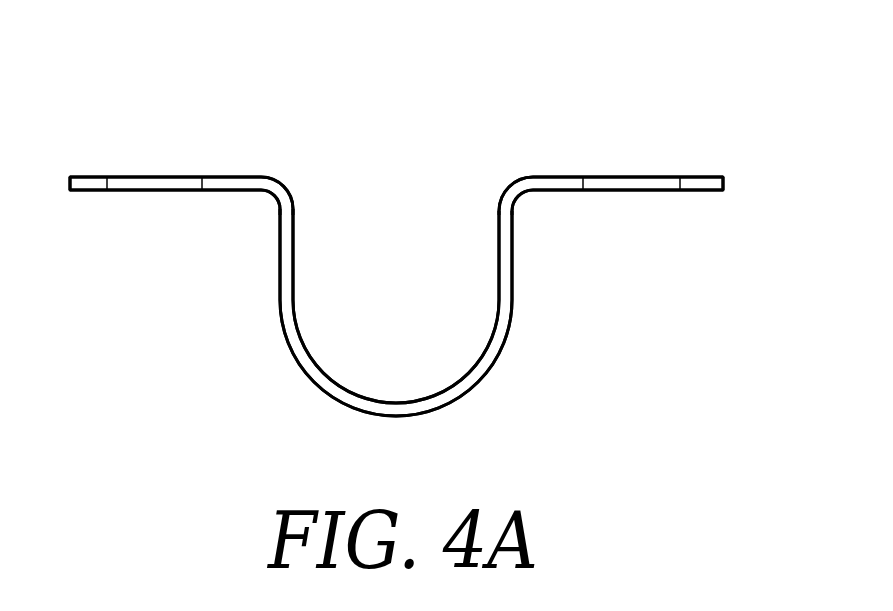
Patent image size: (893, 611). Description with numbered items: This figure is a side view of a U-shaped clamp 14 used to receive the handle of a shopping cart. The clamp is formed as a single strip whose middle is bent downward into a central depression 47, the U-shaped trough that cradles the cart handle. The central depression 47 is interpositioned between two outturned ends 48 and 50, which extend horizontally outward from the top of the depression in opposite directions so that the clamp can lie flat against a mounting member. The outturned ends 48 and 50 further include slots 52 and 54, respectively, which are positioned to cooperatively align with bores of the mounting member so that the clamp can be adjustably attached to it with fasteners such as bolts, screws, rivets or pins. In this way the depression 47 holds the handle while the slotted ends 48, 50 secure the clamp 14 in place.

The U-shaped clamp 14 is at (322, 392).
The central depression 47 is at (405, 403).
The outturned end 48 is at (98, 176).
The outturned end 50 is at (707, 177).
The slot 52 is at (177, 177).
The slot 54 is at (630, 176).